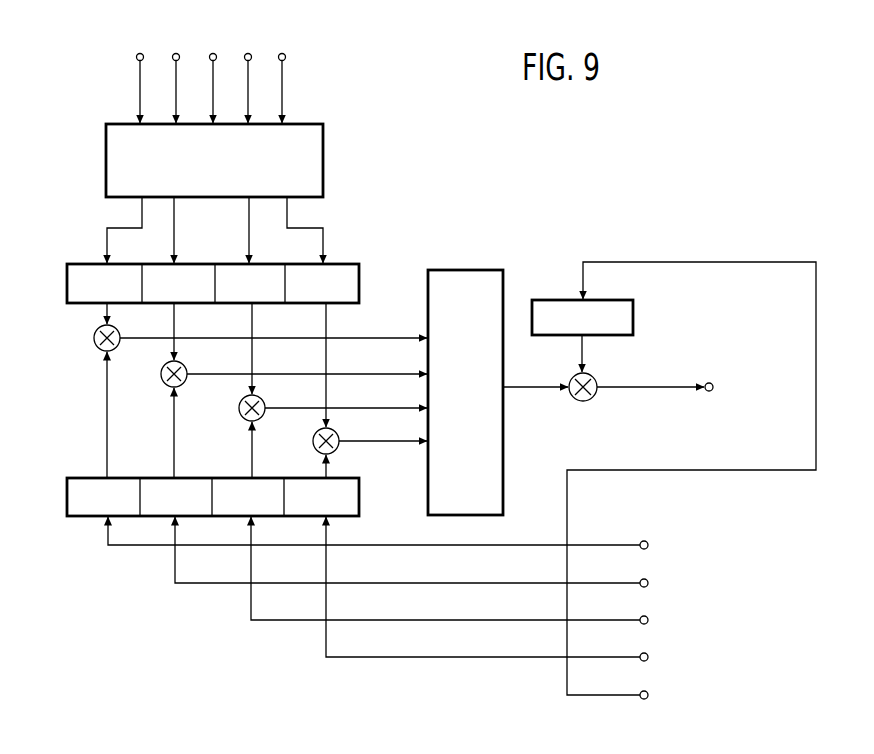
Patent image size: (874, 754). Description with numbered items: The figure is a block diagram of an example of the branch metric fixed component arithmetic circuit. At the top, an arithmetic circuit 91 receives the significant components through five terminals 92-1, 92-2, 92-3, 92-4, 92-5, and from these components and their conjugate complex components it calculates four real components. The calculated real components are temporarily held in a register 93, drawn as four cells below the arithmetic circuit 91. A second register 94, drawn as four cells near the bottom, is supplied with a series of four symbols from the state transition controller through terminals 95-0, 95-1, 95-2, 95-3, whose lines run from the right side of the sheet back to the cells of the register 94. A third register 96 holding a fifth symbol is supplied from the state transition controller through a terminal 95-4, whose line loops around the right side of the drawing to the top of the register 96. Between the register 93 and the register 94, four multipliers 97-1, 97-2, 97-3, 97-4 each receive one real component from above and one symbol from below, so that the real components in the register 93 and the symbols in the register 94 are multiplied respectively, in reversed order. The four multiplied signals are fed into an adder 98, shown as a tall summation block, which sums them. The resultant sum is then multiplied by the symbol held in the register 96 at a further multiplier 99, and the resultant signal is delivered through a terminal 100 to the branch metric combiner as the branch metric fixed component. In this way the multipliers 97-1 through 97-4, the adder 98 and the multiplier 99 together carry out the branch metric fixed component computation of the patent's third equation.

The arithmetic circuit 91 is at (323, 146).
The terminal 92-1 is at (136, 54).
The terminal 92-2 is at (173, 53).
The terminal 92-3 is at (212, 53).
The terminal 92-4 is at (248, 53).
The terminal 92-5 is at (285, 53).
The register 93 is at (66, 277).
The register 94 is at (66, 491).
The terminal 95-0 is at (648, 543).
The terminal 95-1 is at (648, 581).
The terminal 95-2 is at (648, 618).
The terminal 95-3 is at (648, 655).
The terminal 95-4 is at (648, 693).
The register 96 is at (633, 315).
The multiplier 97-1 is at (97, 349).
The multiplier 97-2 is at (165, 384).
The multiplier 97-3 is at (243, 418).
The multiplier 97-4 is at (316, 450).
The adder 98 is at (480, 268).
The multiplier 99 is at (594, 398).
The terminal 100 is at (713, 385).